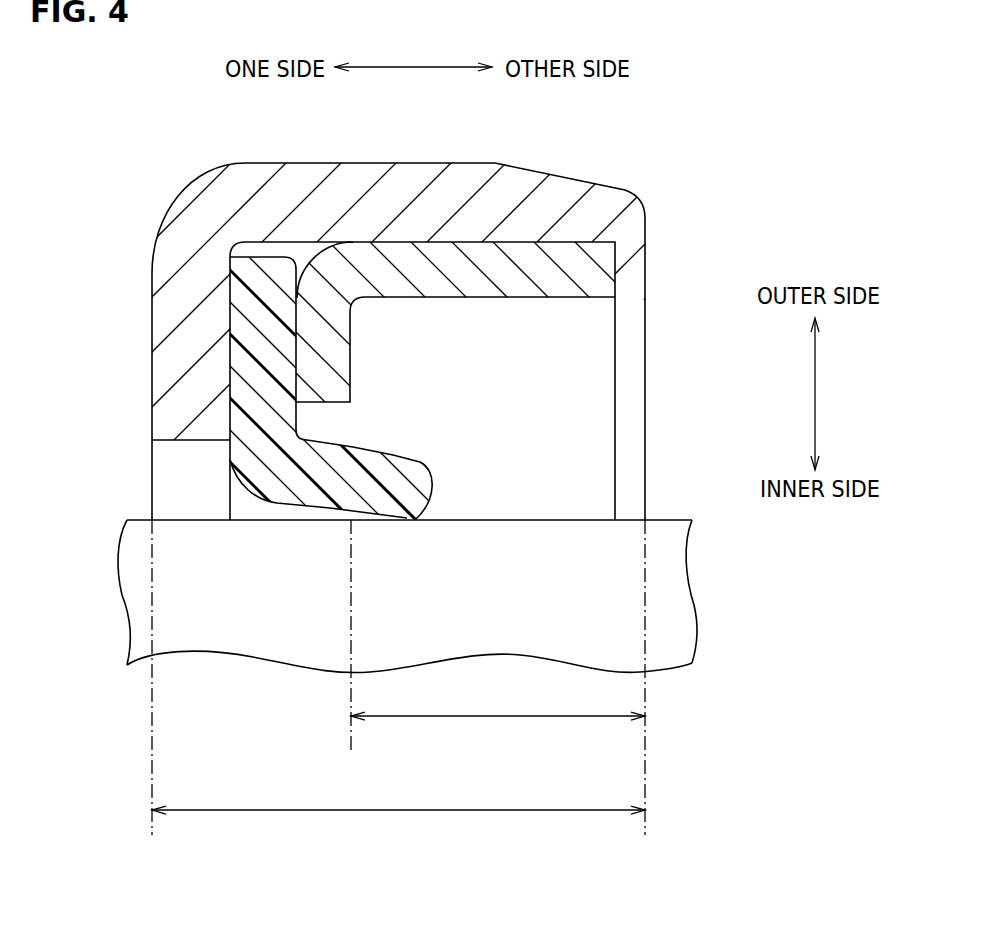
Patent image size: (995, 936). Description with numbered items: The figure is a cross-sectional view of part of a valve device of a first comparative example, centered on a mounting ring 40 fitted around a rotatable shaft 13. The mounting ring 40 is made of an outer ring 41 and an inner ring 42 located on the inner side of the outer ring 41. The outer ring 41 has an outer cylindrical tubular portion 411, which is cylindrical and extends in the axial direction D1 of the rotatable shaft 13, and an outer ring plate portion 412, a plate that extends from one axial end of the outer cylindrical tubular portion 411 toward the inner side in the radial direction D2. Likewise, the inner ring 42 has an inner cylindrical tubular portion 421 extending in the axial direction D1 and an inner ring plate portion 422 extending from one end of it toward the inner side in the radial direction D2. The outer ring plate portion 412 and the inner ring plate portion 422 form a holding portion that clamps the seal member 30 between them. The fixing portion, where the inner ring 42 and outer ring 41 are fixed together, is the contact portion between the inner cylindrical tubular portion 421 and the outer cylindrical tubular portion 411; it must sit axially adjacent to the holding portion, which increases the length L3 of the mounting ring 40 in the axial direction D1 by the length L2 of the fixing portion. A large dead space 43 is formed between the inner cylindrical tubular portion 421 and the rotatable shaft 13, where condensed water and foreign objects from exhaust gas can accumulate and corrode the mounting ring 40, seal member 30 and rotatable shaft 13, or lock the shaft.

The rotatable shaft 13 is at (135, 575).
The seal member 30 is at (432, 490).
The mounting ring 40 is at (740, 153).
The outer ring 41 is at (598, 183).
The outer cylindrical tubular portion 411 is at (333, 203).
The outer ring plate portion 412 is at (182, 347).
The inner ring 42 is at (585, 265).
The inner cylindrical tubular portion 421 is at (475, 267).
The inner ring plate portion 422 is at (312, 378).
The dead space 43 is at (490, 385).
The axial direction D1 is at (410, 65).
The radial direction D2 is at (820, 390).
The length of the fixing portion L2 is at (505, 718).
The length of the mounting ring L3 is at (392, 812).